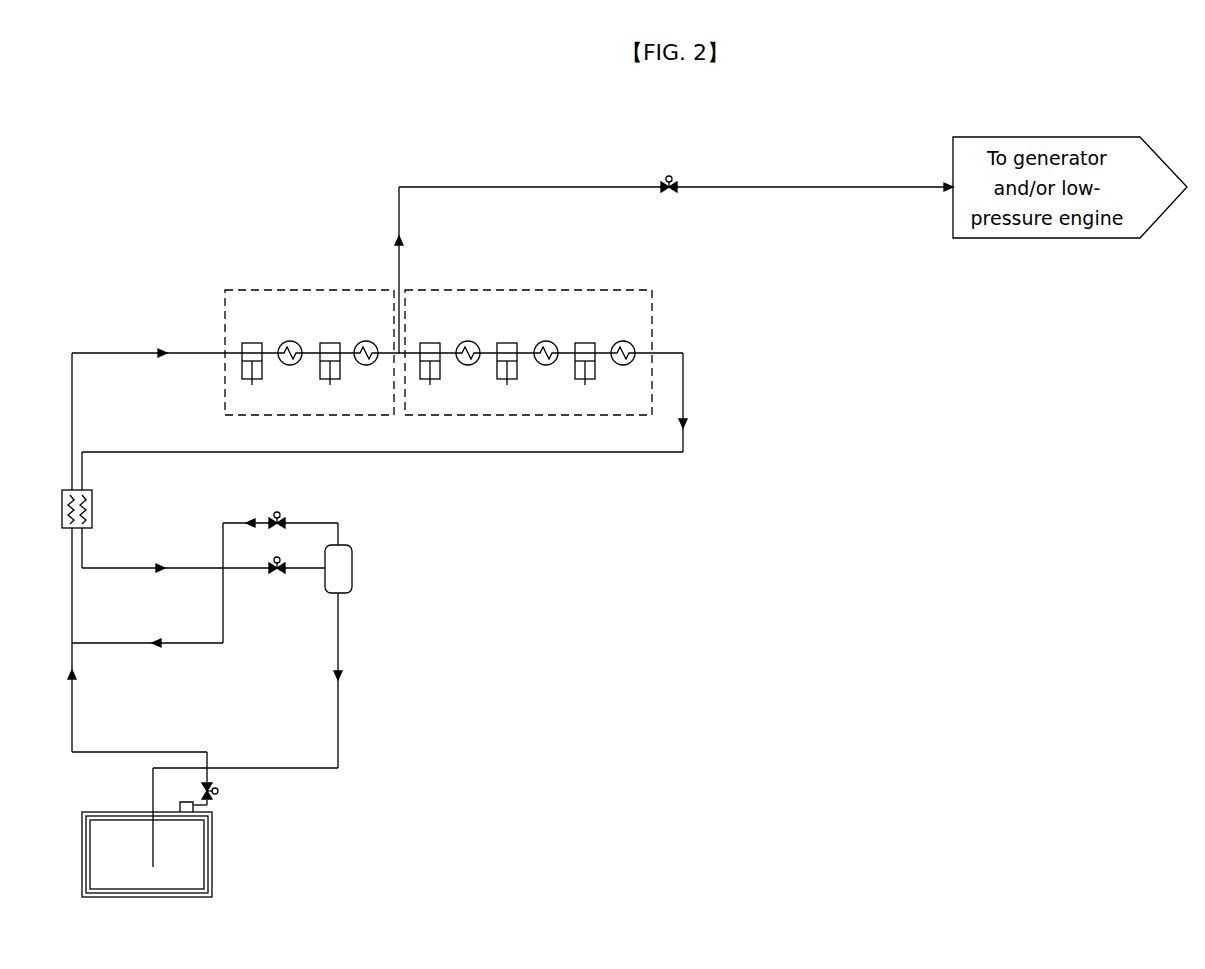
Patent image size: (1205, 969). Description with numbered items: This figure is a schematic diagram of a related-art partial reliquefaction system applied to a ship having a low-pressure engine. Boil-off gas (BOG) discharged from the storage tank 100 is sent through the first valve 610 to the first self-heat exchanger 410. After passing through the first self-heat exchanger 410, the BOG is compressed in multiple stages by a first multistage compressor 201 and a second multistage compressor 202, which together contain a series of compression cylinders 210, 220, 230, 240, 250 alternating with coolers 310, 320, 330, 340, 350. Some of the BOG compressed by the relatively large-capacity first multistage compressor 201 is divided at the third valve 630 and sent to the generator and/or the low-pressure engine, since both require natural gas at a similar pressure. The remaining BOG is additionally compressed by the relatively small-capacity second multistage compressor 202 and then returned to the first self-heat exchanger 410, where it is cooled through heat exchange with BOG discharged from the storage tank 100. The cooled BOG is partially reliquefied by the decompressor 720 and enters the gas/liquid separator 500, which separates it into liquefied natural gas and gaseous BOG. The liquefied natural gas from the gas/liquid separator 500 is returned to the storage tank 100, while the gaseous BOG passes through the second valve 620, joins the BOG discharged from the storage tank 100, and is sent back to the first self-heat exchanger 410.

The storage tank 100 is at (147, 898).
The first multistage compressor 201 is at (309, 290).
The second multistage compressor 202 is at (526, 290).
The compression cylinder 210 is at (250, 343).
The compression cylinder 220 is at (328, 343).
The compression cylinder 230 is at (428, 343).
The compression cylinder 240 is at (505, 343).
The compression cylinder 250 is at (583, 343).
The cooler 310 is at (290, 365).
The cooler 320 is at (366, 365).
The cooler 330 is at (468, 365).
The cooler 340 is at (546, 365).
The cooler 350 is at (623, 365).
The first self-heat exchanger 410 is at (92, 505).
The gas/liquid separator 500 is at (352, 565).
The first valve 610 is at (218, 791).
The second valve 620 is at (277, 513).
The third valve 630 is at (669, 178).
The decompressor 720 is at (278, 574).